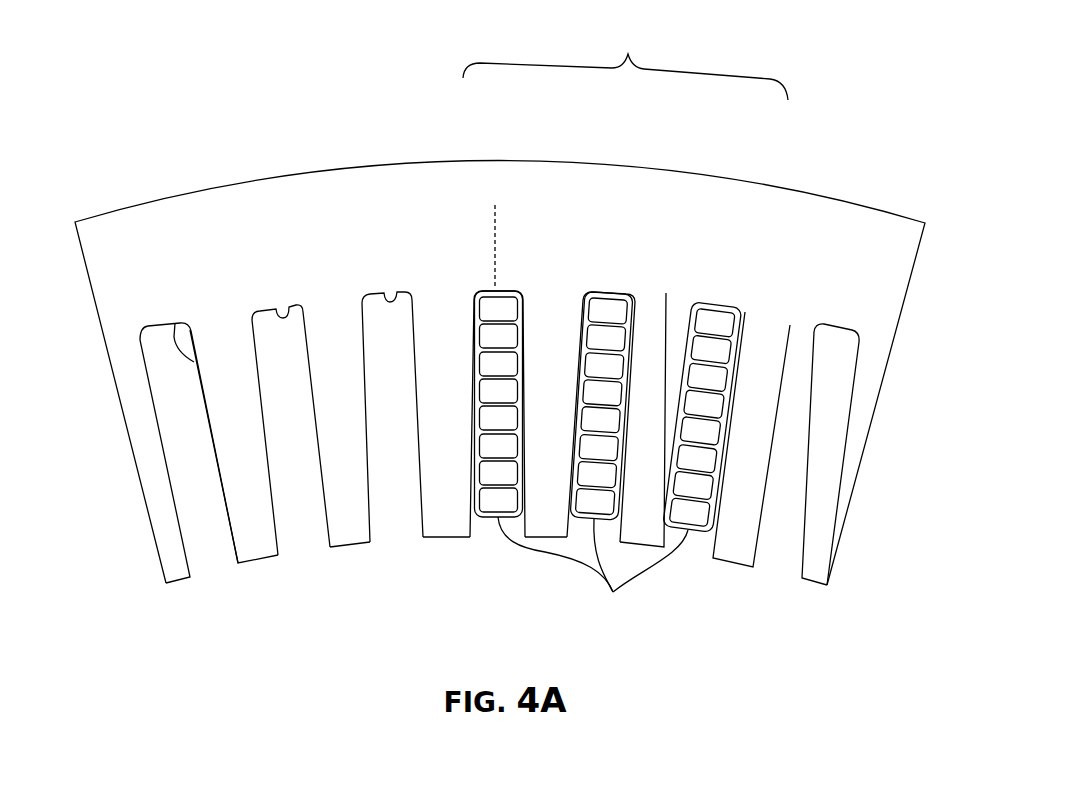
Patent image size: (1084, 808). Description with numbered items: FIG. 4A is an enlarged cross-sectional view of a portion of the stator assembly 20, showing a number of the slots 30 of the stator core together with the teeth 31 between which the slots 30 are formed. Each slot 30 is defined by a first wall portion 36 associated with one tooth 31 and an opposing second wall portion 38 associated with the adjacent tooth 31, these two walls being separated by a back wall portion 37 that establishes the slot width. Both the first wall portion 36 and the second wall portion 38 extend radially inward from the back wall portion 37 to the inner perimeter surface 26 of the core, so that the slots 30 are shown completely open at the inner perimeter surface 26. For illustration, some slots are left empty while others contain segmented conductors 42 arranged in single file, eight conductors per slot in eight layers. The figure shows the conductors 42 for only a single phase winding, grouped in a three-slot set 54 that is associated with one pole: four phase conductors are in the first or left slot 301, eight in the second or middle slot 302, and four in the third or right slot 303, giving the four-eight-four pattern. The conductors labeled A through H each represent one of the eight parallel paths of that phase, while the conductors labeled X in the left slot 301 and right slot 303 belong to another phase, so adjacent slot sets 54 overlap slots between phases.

The stator assembly 20 is at (836, 148).
The inner perimeter surface 26 is at (262, 561).
The slot 30 is at (266, 330).
The first slot 301 is at (482, 288).
The second slot 302 is at (602, 291).
The third slot 303 is at (727, 303).
The tooth 31 is at (655, 340).
The first wall portion 36 is at (164, 463).
The back wall portion 37 is at (150, 333).
The second wall portion 38 is at (175, 323).
The conductor 42 is at (593, 573).
The slot set 54 is at (625, 63).